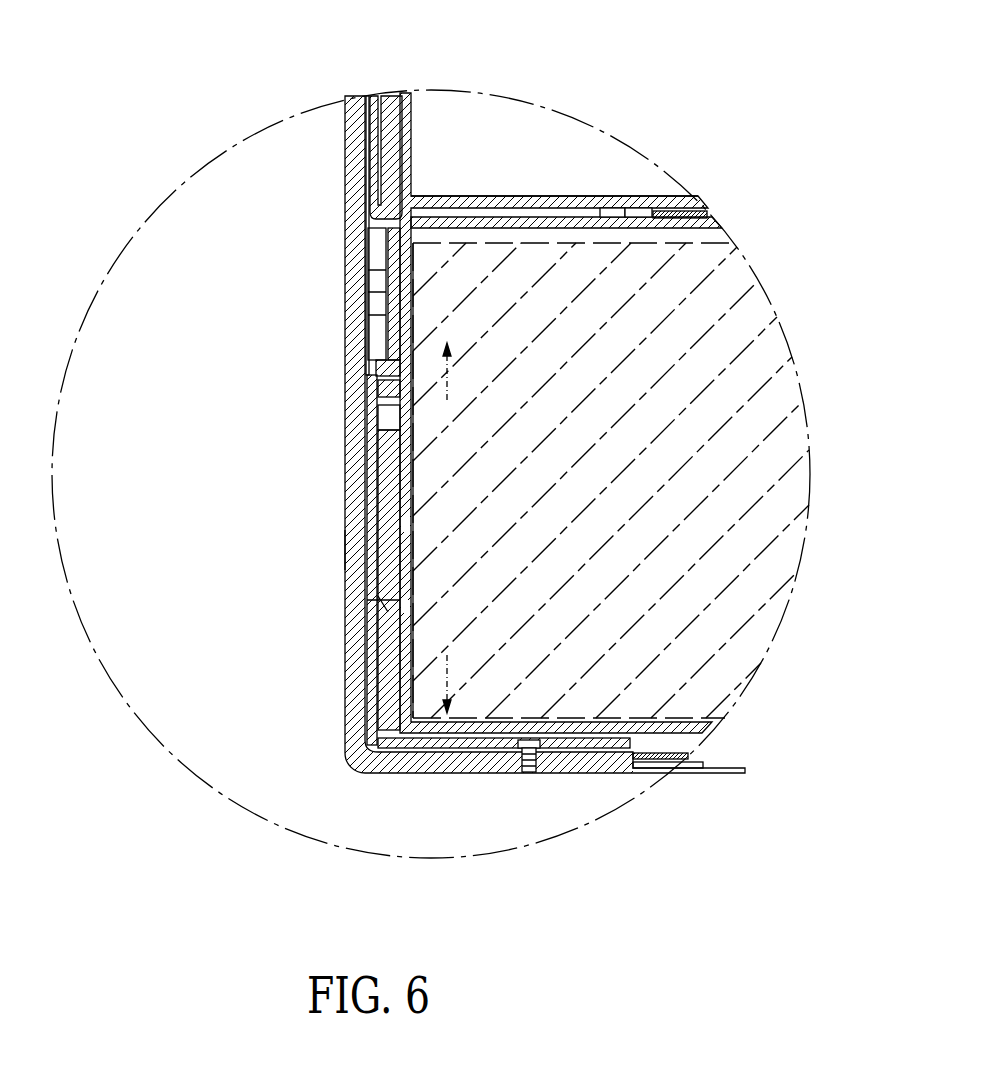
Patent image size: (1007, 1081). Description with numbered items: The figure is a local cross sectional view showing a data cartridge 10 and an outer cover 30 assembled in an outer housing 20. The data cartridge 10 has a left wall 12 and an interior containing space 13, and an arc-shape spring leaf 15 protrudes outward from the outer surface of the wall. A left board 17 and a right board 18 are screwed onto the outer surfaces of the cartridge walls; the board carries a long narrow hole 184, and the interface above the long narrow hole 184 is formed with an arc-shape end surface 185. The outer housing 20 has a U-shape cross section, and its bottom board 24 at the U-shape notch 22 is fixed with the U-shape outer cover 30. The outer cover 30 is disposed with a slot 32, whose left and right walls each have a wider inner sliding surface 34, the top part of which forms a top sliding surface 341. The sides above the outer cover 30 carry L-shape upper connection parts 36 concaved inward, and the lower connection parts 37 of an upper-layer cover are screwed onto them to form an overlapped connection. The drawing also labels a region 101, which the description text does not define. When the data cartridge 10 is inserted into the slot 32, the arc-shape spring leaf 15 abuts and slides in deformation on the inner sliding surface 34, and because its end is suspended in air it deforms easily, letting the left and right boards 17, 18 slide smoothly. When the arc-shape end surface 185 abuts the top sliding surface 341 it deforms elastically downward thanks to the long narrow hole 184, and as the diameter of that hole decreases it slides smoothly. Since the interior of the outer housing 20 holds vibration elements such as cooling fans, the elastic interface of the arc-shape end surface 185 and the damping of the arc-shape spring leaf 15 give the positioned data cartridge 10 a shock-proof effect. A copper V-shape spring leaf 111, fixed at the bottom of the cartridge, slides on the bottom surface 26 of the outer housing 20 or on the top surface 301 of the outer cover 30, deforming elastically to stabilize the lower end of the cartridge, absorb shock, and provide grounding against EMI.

The data cartridge 10 is at (504, 197).
The left wall 12 is at (392, 481).
The containing space 13 is at (546, 199).
The arc-shape spring leaf 15 is at (345, 550).
The left board 17 is at (396, 135).
The right board 18 is at (360, 702).
The outer housing 20 is at (343, 274).
The U-shape notch 22 is at (556, 760).
The bottom board 24 is at (523, 772).
The bottom surface 26 is at (660, 768).
The U-shape outer cover 30 is at (610, 218).
The slot 32 is at (375, 460).
The inner sliding surface 34 is at (373, 600).
The L-shape upper connection part 36 is at (403, 273).
The lower connection part 37 is at (368, 247).
The display panel 101 is at (716, 292).
The V-shape spring leaf 111 is at (675, 211).
The long narrow hole 184 is at (385, 418).
The arc-shape end surface 185 is at (385, 372).
The top surface 301 is at (627, 208).
The top sliding surface 341 is at (400, 374).